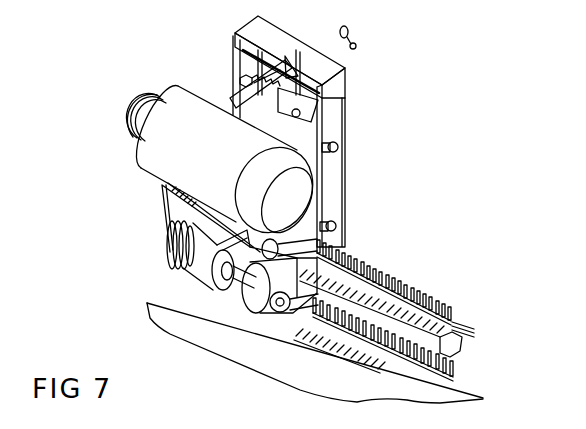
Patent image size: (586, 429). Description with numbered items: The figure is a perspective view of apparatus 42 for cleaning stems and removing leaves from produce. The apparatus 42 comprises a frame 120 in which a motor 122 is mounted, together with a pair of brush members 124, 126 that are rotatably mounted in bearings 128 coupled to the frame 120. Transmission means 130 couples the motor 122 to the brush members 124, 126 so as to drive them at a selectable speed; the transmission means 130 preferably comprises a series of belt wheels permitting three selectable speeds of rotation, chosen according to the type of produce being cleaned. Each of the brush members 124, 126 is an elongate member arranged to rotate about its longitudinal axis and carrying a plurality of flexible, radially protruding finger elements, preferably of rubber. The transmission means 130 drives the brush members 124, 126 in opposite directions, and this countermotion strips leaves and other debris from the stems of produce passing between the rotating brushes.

The apparatus for cleaning stems 42 is at (410, 101).
The frame 120 is at (333, 181).
The motor 122 is at (184, 93).
The brush member 124 is at (384, 271).
The brush member 126 is at (455, 383).
The bearings 128 is at (277, 313).
The transmission means 130 is at (128, 119).